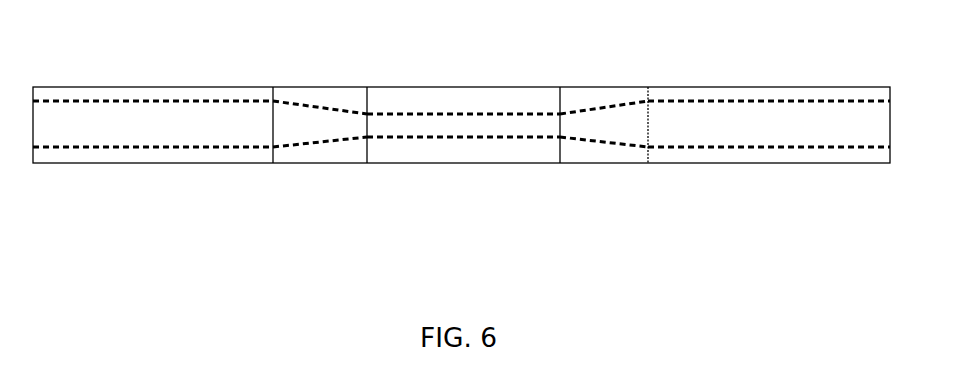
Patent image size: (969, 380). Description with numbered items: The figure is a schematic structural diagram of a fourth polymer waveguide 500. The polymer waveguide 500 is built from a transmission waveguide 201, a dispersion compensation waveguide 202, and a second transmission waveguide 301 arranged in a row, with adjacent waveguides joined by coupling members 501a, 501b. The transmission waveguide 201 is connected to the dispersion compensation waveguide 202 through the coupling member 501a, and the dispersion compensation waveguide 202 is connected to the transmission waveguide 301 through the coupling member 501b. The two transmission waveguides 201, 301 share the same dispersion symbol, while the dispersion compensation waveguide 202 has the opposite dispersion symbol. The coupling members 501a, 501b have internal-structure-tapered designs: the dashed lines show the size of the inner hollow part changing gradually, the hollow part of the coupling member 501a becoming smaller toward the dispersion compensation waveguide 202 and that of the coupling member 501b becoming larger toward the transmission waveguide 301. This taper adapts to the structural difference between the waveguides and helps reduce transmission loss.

The transmission waveguide 201 is at (144, 87).
The coupling member 501a is at (300, 87).
The dispersion compensation waveguide 202 is at (465, 87).
The coupling member 501b is at (587, 87).
The transmission waveguide 301 is at (737, 87).
The polymer waveguide 500 is at (698, 285).